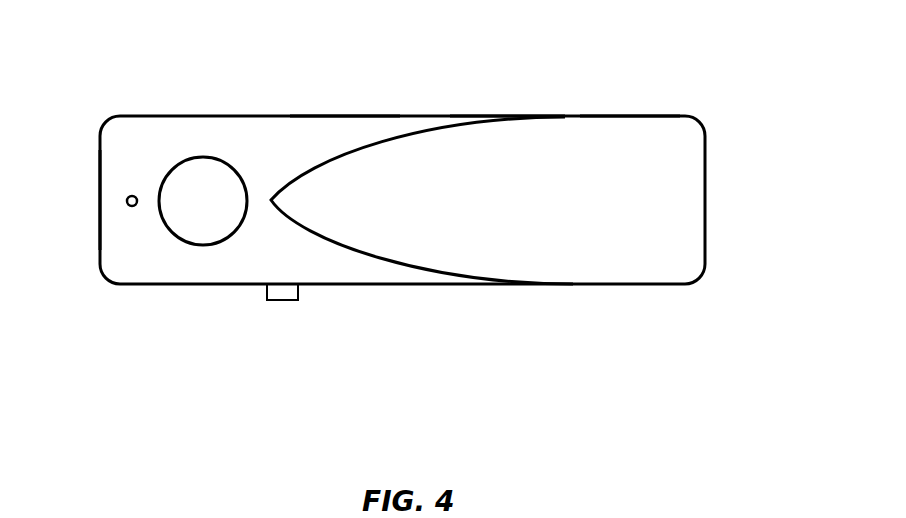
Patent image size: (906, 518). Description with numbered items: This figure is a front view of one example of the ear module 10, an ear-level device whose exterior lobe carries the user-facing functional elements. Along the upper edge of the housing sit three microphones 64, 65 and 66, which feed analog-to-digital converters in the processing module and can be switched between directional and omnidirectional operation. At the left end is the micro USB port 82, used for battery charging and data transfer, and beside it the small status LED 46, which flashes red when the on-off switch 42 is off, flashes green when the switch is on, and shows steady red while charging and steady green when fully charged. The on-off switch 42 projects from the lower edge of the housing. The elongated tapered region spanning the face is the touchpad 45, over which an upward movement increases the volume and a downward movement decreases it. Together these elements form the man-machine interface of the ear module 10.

The ear module 10 is at (703, 53).
The micro USB port 82 is at (100, 183).
The status LED 46 is at (126, 201).
The touchpad 45 is at (413, 252).
The on-off switch 42 is at (283, 292).
The first microphone 64 is at (305, 116).
The second microphone 65 is at (478, 116).
The third microphone 66 is at (614, 116).